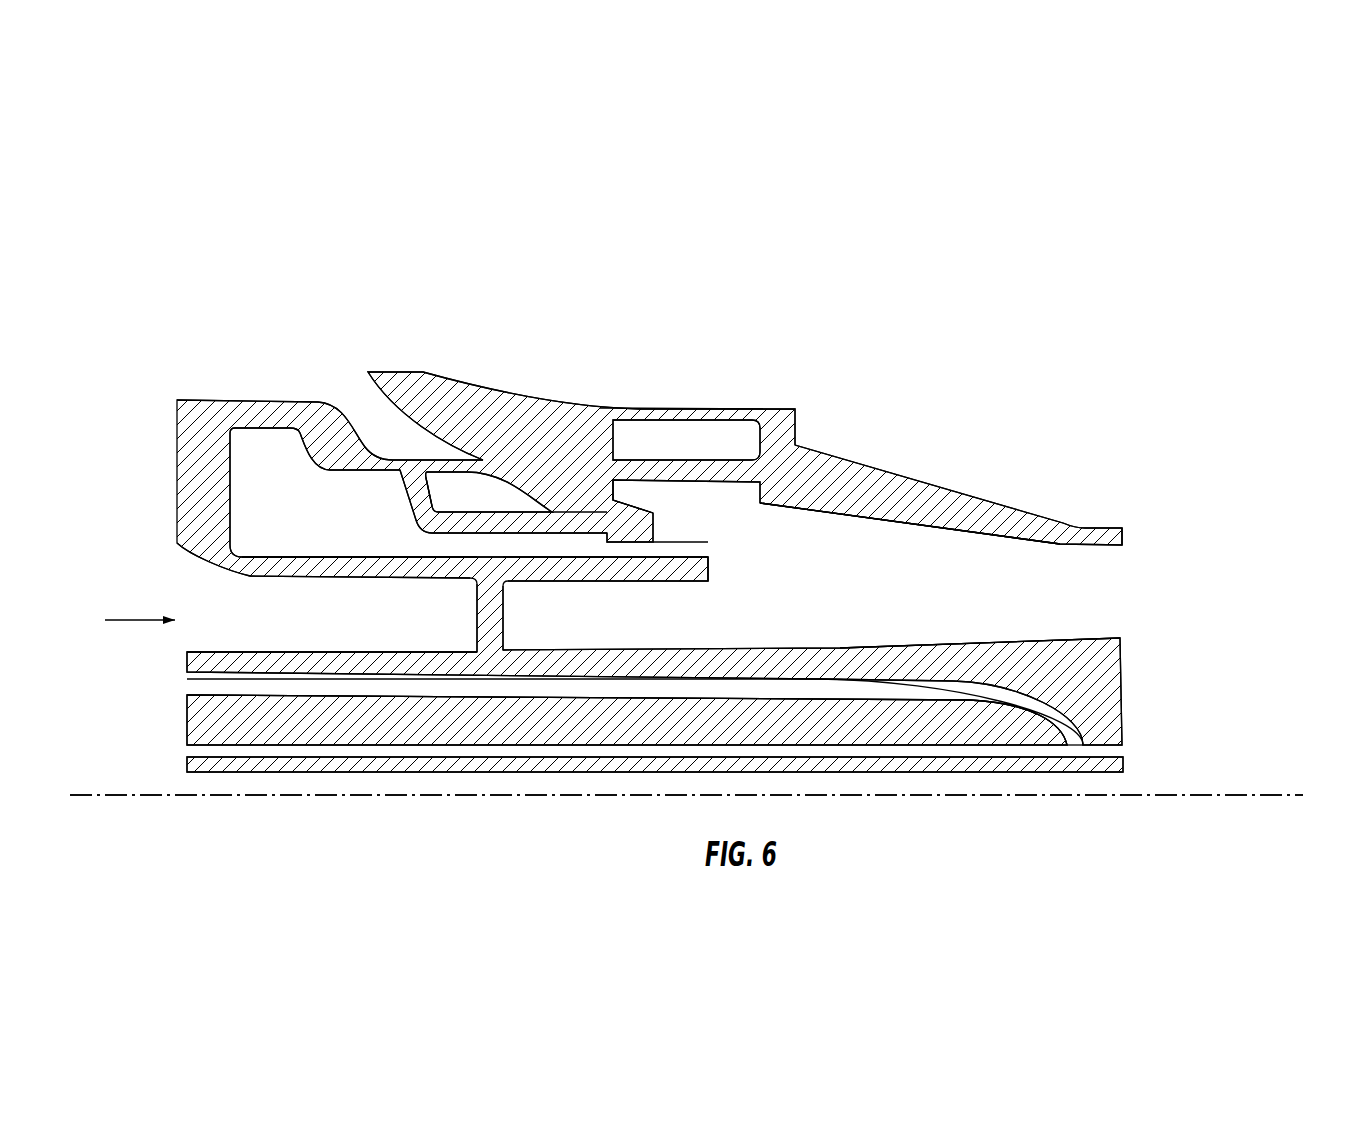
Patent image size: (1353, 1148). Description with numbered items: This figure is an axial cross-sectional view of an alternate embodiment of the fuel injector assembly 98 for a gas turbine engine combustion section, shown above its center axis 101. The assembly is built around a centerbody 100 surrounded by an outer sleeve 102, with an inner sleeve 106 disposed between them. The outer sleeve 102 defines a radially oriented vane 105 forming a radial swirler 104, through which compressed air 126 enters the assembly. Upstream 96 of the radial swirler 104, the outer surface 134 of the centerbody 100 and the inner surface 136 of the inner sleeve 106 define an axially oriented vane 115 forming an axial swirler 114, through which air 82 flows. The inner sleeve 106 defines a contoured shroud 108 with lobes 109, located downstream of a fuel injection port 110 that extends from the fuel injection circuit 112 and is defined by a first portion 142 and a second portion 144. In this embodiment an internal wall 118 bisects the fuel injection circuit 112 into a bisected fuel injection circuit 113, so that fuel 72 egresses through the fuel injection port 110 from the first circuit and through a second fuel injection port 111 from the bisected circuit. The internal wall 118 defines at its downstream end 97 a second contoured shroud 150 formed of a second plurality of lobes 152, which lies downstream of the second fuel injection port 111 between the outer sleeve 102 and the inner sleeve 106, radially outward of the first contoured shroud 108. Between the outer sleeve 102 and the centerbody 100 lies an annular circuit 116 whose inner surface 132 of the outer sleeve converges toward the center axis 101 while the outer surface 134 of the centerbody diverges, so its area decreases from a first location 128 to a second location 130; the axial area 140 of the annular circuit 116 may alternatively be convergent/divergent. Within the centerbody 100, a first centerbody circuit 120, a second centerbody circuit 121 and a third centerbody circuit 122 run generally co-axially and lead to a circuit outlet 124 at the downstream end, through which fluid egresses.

The fuel 72 is at (447, 548).
The air 82 is at (138, 618).
The upstream 96 is at (65, 530).
The downstream end 97 is at (1342, 697).
The fuel injector assembly 98 is at (682, 312).
The centerbody 100 is at (1117, 665).
The center axis 101 is at (1240, 795).
The outer sleeve 102 is at (257, 405).
The radial swirler 104 is at (742, 410).
The radially oriented vane 105 is at (660, 408).
The inner sleeve 106 is at (317, 568).
The contoured shroud 108 is at (713, 581).
The lobes 109 is at (708, 548).
The fuel injection port 110 is at (657, 553).
The second fuel injection port 111 is at (625, 515).
The fuel injection circuit 112 is at (302, 512).
The bisected fuel injection circuit 113 is at (478, 512).
The axial swirler 114 is at (478, 599).
The axially oriented vane 115 is at (477, 617).
The annular circuit 116 is at (1035, 582).
The internal wall 118 is at (420, 503).
The first centerbody circuit 120 is at (215, 783).
The second centerbody circuit 121 is at (213, 752).
The third centerbody circuit 122 is at (220, 685).
The circuit outlet 124 is at (1118, 748).
The compressed air 126 is at (738, 498).
The first location 128 is at (772, 504).
The second location 130 is at (1113, 545).
The inner surface 132 is at (923, 523).
The outer surface 134 is at (297, 647).
The inner surface 136 is at (243, 572).
The axial area 140 is at (1060, 598).
The first portion 142 is at (570, 505).
The second portion 144 is at (573, 557).
The second contoured shroud 150 is at (635, 508).
The second plurality of lobes 152 is at (653, 515).